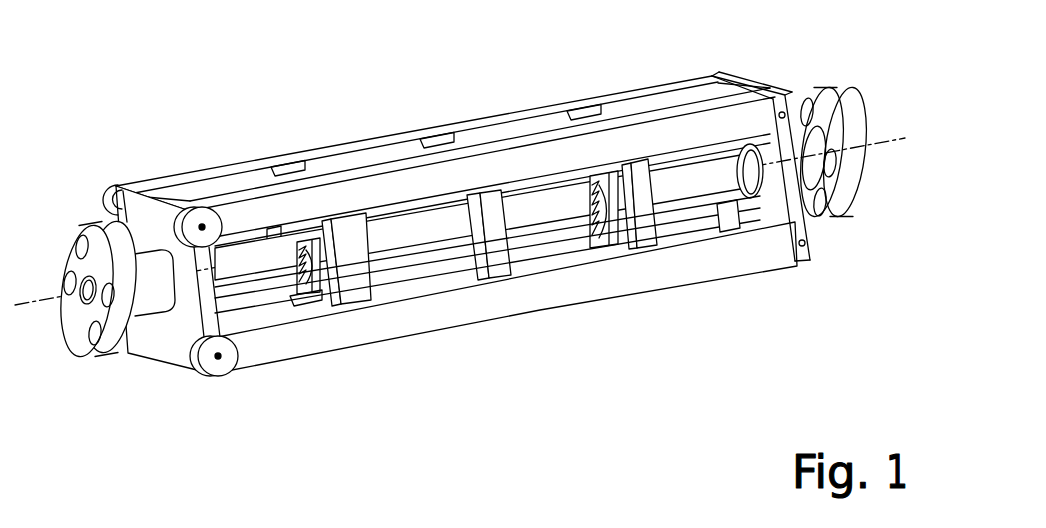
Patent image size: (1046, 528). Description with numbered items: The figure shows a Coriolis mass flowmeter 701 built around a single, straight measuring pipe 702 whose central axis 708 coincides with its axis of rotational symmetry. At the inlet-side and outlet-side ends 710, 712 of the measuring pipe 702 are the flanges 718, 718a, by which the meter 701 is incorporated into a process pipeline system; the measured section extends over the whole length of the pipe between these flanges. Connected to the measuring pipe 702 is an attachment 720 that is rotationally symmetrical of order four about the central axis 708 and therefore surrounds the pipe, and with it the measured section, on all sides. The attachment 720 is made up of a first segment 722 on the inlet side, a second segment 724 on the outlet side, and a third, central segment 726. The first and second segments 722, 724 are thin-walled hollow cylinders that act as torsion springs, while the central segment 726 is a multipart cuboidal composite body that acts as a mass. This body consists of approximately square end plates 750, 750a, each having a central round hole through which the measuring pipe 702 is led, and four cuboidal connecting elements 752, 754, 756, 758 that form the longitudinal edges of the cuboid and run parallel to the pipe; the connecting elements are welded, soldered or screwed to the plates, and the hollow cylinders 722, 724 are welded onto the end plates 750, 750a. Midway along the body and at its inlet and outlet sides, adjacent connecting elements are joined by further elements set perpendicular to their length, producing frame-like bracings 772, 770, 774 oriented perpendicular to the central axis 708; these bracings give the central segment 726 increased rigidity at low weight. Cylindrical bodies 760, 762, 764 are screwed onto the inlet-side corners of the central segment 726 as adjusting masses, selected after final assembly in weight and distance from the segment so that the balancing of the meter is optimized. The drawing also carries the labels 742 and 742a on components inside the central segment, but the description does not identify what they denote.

The Coriolis mass flowmeter 701 is at (322, 470).
The measuring pipe 702 is at (382, 232).
The central axis 708 is at (886, 138).
The end of measuring pipe 710 is at (121, 362).
The end of measuring pipe 712 is at (812, 187).
The flange 718 is at (68, 254).
The flange 718a is at (848, 204).
The attachment 720 is at (348, 133).
The first segment 722 is at (148, 264).
The second segment 724 is at (810, 152).
The third, central segment 726 is at (417, 123).
The drive nut 742 is at (601, 175).
The second drive nut 742a is at (298, 248).
The end plate 750 is at (137, 204).
The end plate 750a is at (725, 76).
The connecting element 752 is at (733, 252).
The connecting element 754 is at (627, 138).
The connecting element 756 is at (470, 122).
The connecting element 758 is at (533, 247).
The cylindrical body 760 is at (201, 225).
The cylindrical body 762 is at (210, 363).
The cylindrical body 764 is at (107, 187).
The frame-like bracing 770 is at (347, 293).
The frame-like bracing 772 is at (543, 293).
The frame-like bracing 774 is at (640, 230).